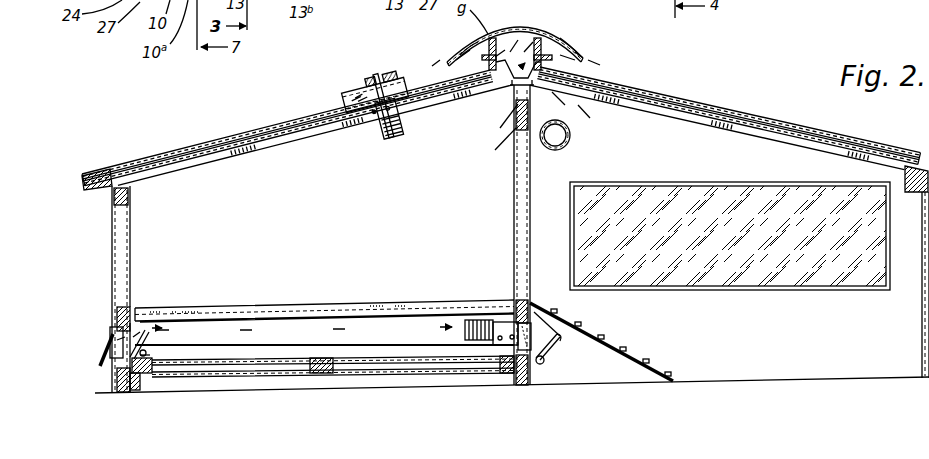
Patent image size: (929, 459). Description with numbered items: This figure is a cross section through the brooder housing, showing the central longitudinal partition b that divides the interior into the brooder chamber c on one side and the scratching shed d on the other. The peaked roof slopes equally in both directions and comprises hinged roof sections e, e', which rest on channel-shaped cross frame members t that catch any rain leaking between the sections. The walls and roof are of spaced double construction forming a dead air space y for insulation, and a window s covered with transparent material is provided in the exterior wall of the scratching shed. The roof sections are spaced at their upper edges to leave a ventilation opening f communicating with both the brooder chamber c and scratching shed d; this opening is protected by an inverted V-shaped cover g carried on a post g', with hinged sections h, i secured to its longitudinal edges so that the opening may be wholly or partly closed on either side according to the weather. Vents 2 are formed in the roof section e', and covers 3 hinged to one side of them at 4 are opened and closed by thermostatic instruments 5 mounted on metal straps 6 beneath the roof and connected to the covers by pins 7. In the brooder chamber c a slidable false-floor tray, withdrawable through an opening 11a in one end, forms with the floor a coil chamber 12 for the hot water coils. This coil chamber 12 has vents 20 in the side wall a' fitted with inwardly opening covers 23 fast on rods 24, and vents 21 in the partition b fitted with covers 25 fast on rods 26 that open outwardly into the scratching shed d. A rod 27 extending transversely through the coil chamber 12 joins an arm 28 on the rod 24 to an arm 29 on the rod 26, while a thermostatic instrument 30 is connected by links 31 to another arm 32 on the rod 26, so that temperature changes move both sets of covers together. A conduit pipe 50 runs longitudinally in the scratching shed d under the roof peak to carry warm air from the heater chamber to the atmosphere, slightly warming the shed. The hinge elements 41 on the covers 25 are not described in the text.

The vents 2 is at (363, 97).
The covers 3 is at (368, 80).
The hinge 4 is at (407, 77).
The thermostatic instruments 5 is at (397, 137).
The metal straps 6 is at (405, 138).
The pins 7 is at (380, 78).
The opening 11a is at (214, 303).
The coil chamber 12 is at (299, 333).
The vents 20 is at (122, 353).
The vents 21 is at (530, 330).
The inwardly opening covers 23 is at (148, 328).
The rods 24 is at (158, 355).
The covers 25 is at (567, 320).
The rods 26 is at (541, 364).
The rod 27 is at (397, 343).
The arm 28 is at (150, 350).
The arm 29 is at (557, 348).
The thermostatic instrument 30 is at (475, 317).
The links 31 is at (493, 343).
The arm 32 is at (510, 347).
The hinge 41 is at (637, 357).
The conduit pipe 50 is at (570, 134).
The wall a' is at (508, 289).
The central longitudinal partition b is at (530, 202).
The brooder chamber c is at (322, 224).
The scratching shed d is at (730, 320).
The roof section e is at (729, 129).
The roof section e' is at (297, 129).
The ventilation opening f is at (538, 40).
The inverted V-shaped cover g is at (515, 33).
The post g' is at (583, 29).
The hinged section h is at (468, 48).
The hinged section i is at (573, 53).
The window s is at (660, 197).
The cross frame members t is at (257, 143).
The dead air space y is at (272, 100).